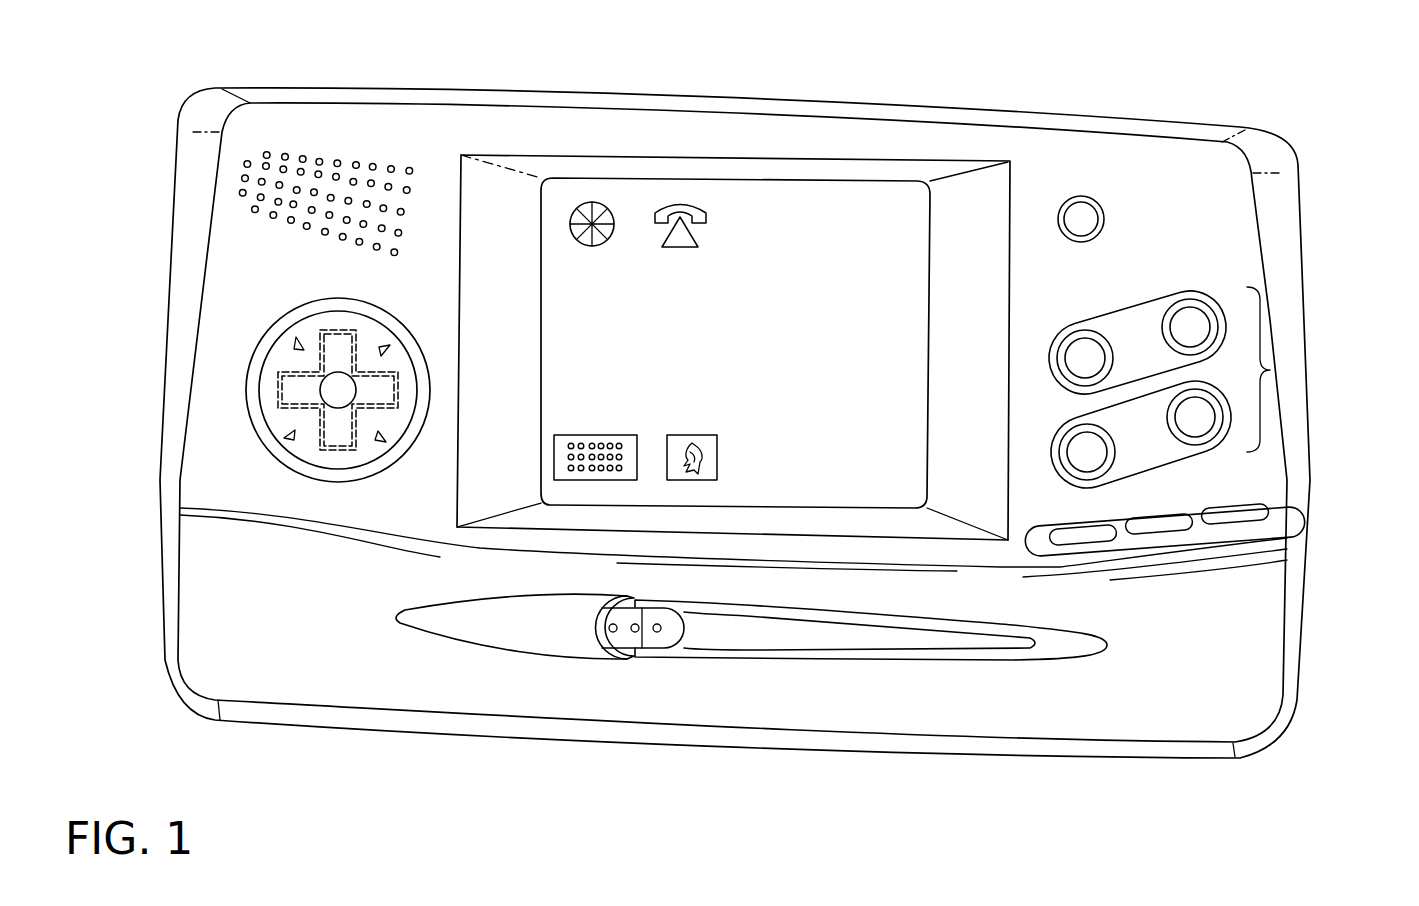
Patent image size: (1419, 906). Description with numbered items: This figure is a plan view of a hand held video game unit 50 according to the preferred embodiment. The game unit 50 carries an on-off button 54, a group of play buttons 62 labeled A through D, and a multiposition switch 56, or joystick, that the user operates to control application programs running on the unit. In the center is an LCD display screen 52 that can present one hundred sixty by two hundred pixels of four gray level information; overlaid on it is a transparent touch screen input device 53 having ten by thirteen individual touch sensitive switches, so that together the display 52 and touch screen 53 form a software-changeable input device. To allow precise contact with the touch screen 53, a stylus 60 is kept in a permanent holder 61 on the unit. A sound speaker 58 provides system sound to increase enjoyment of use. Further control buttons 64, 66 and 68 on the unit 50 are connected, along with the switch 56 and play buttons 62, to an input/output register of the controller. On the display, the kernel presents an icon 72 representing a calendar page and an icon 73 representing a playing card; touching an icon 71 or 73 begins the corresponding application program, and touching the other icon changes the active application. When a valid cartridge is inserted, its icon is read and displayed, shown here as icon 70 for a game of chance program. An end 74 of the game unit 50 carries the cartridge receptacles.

The hand held video game unit 50 is at (848, 97).
The LCD display screen 52 is at (775, 177).
The transparent touch screen input device 53 is at (885, 225).
The on-off button 54 is at (1081, 197).
The multiposition switch 56 is at (278, 412).
The sound speaker 58 is at (341, 148).
The stylus 60 is at (706, 636).
The permanent holder 61 is at (868, 653).
The group of play buttons 62 is at (1272, 370).
The control button 64 is at (1163, 527).
The control button 66 is at (1240, 518).
The control button 68 is at (1083, 533).
The cartridge icon 70 is at (593, 203).
The icon 71 is at (587, 434).
The calendar icon 72 is at (680, 193).
The playing card icon 73 is at (718, 456).
The end of the game unit 74 is at (1342, 241).